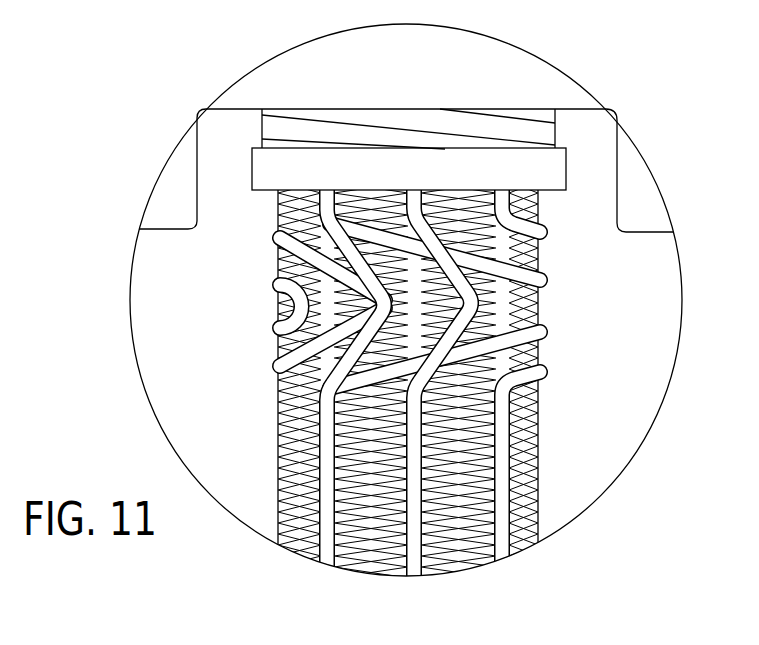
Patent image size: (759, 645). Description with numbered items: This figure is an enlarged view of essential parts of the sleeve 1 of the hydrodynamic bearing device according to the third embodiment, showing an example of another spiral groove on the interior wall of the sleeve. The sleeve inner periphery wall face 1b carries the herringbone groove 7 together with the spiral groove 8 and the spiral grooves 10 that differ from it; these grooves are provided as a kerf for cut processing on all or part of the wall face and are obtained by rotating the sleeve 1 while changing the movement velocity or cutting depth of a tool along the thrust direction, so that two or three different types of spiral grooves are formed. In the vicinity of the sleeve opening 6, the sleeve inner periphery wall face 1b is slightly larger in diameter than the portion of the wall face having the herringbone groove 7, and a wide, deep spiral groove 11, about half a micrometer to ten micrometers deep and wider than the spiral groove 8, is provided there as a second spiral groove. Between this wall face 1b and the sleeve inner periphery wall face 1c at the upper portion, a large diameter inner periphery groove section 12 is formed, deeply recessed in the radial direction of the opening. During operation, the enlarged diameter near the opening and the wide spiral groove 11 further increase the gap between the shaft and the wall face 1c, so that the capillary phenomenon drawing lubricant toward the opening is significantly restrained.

The sleeve 1 is at (667, 299).
The sleeve inner periphery wall face 1b is at (279, 500).
The sleeve inner periphery wall face 1c is at (267, 127).
The sleeve opening 6 is at (554, 108).
The herringbone groove 7 is at (540, 272).
The spiral groove 8 is at (483, 437).
The spiral groove 10 is at (483, 455).
The spiral groove 11 is at (424, 131).
The large diameter inner periphery groove section 12 is at (253, 167).